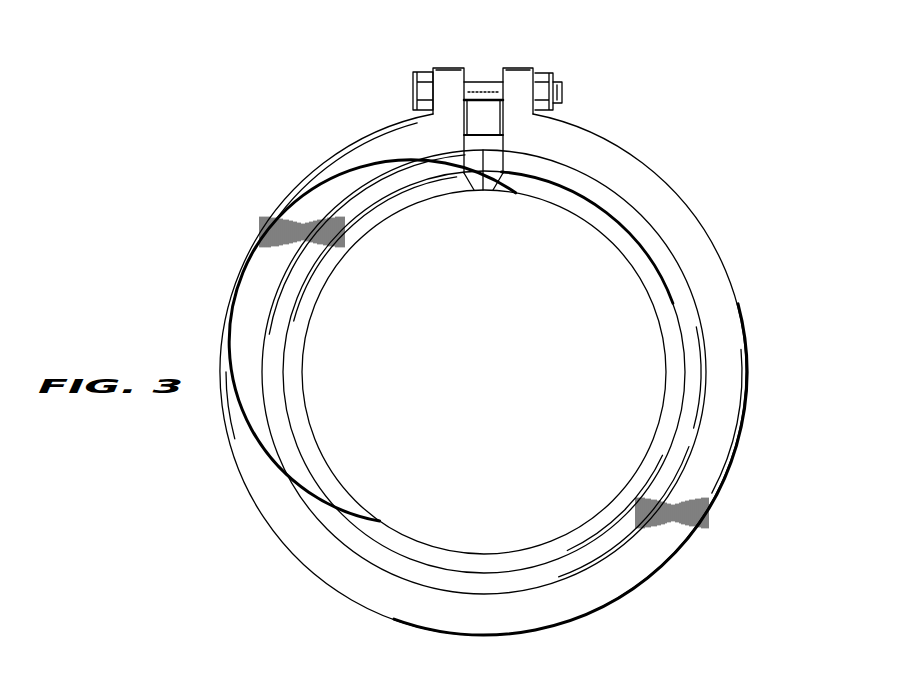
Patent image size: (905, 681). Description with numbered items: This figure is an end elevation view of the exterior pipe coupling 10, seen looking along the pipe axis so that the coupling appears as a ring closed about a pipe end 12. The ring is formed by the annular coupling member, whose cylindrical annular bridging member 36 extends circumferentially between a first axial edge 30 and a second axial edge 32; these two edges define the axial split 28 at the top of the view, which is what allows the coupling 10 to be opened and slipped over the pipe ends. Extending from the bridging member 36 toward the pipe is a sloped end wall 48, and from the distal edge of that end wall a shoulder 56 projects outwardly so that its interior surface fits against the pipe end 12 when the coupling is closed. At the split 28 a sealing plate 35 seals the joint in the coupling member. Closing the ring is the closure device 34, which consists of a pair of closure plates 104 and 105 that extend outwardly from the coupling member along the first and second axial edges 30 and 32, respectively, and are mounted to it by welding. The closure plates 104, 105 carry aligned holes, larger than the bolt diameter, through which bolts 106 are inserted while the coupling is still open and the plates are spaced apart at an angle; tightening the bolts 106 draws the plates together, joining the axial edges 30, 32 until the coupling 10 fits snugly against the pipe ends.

The pipe coupling 10 is at (228, 286).
The pipe end 12 is at (307, 342).
The axial split 28 is at (482, 62).
The first axial edge 30 is at (473, 194).
The second axial edge 32 is at (493, 194).
The closure device 34 is at (428, 63).
The sealing plate 35 is at (483, 190).
The annular bridging member 36 is at (288, 196).
The sloped end wall 48 is at (682, 223).
The shoulder 56 is at (365, 198).
The closure plate 104 is at (450, 66).
The closure plate 105 is at (517, 66).
The bolt 106 is at (563, 88).